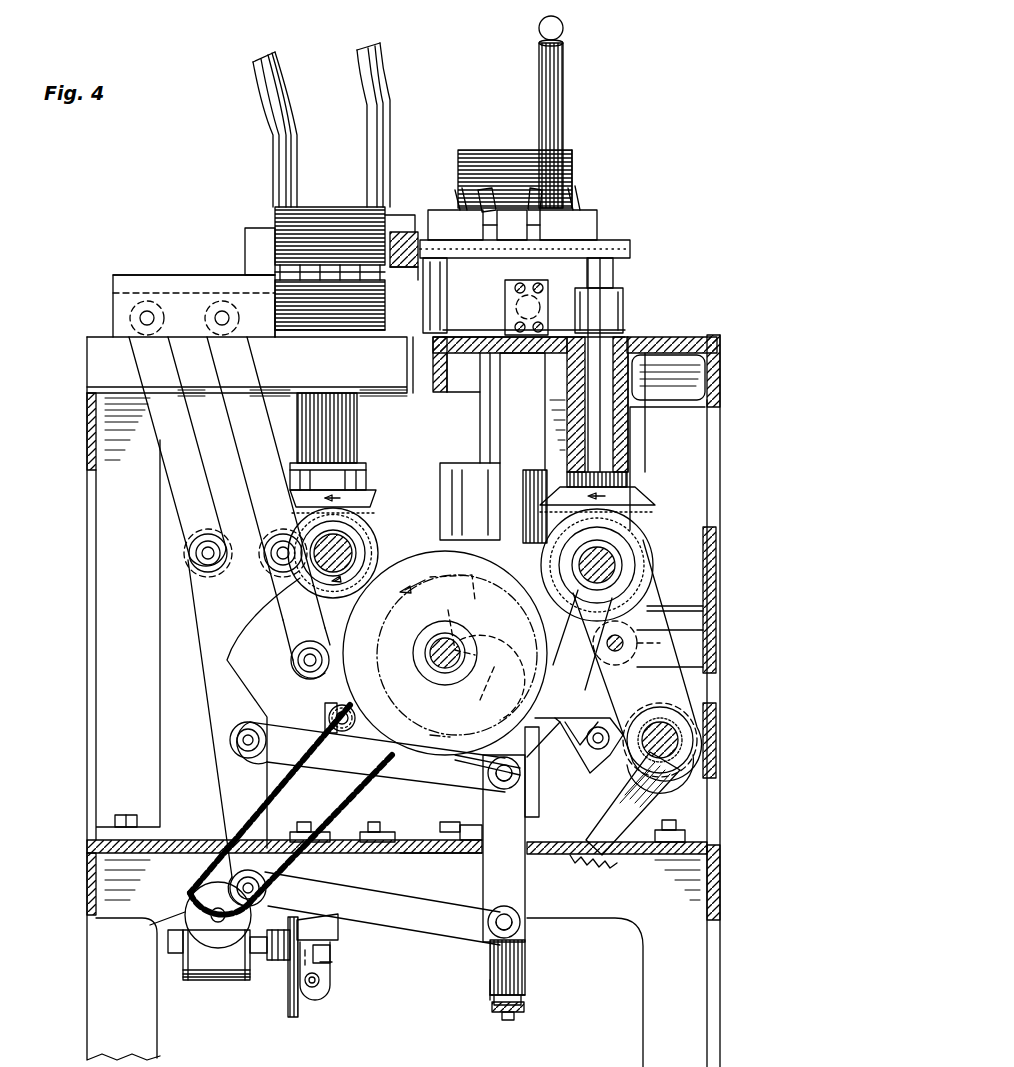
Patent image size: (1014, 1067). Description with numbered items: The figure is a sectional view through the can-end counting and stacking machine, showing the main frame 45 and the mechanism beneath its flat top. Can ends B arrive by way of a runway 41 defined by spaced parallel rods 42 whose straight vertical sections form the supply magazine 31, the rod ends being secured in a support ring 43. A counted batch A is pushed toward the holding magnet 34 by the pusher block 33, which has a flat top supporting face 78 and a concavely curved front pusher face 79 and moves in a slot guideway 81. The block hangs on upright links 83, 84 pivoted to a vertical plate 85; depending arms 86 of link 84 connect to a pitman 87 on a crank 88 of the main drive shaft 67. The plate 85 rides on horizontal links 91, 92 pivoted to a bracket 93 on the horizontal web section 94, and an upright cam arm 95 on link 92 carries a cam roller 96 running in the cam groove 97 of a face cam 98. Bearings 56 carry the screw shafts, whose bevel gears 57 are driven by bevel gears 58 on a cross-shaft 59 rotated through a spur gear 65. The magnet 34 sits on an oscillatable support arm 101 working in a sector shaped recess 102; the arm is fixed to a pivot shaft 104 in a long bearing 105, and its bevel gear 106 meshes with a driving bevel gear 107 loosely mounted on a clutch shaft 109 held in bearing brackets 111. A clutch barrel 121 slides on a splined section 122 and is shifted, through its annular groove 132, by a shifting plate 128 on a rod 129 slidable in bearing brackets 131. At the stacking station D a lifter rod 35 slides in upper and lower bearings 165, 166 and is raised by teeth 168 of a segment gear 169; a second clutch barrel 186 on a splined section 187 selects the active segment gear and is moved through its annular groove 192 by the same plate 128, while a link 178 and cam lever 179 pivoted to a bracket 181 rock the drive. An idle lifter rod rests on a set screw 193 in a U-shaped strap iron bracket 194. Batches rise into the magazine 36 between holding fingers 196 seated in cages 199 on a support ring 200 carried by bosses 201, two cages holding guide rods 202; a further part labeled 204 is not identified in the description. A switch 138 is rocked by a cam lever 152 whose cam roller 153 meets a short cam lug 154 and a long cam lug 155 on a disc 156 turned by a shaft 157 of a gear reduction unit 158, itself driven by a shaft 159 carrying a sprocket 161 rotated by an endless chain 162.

The runway 41 is at (320, 68).
The rods 42 is at (275, 103).
The supply magazine 31 is at (315, 190).
The support ring 43 is at (258, 238).
The pusher member 33 is at (135, 287).
The flat top supporting face 78 is at (170, 272).
The front pusher face 79 is at (273, 320).
The batch A is at (340, 300).
The can ends B is at (320, 215).
The slot guideway 81 is at (100, 358).
The upright link 83 is at (182, 417).
The upright link 84 is at (254, 417).
The plate 85 is at (220, 630).
The depending arms 86 is at (297, 627).
The pitman 87 is at (325, 678).
The bearings 56 is at (345, 425).
The bevel gears 57 is at (360, 470).
The spur gear 65 is at (360, 495).
The bevel gears 58 is at (372, 535).
The cross-shaft 59 is at (328, 562).
The crank 88 is at (485, 620).
The main drive shaft 67 is at (440, 660).
The cam roller 96 is at (505, 650).
The cam groove 97 is at (432, 735).
The face cam 98 is at (408, 753).
The horizontal link 92 is at (342, 758).
The horizontal link 91 is at (410, 916).
The bracket 93 is at (512, 838).
The horizontal web section 94 is at (425, 850).
The cam arm 95 is at (525, 748).
The lower bearing 166 is at (540, 797).
The upper bearing 165 is at (490, 425).
The annular groove 132 is at (547, 540).
The support arm 101 is at (485, 335).
The sector shaped recess 102 is at (470, 345).
The pivot shaft 104 is at (598, 355).
The long bearing 105 is at (640, 405).
The bevel gear 106 is at (640, 490).
The driving bevel gear 107 is at (636, 553).
The clutch shaft 109 is at (610, 567).
The bearing brackets 111 is at (685, 592).
The clutch barrel 121 is at (615, 545).
The splined section 122 is at (590, 592).
The shifting plate 128 is at (660, 608).
The horizontal rod 129 is at (618, 655).
The bearing brackets 131 is at (682, 636).
The link 178 is at (595, 765).
The cam lever 179 is at (565, 720).
The clutch barrel 186 is at (682, 740).
The splined section 187 is at (660, 728).
The annular groove 192 is at (668, 770).
The segment gear 169 is at (650, 821).
The teeth 168 is at (583, 866).
The lifter rod 35 is at (520, 972).
The set screw 193 is at (515, 1015).
The U-shaped strap iron bracket 194 is at (490, 990).
The short cam lug 154 is at (305, 940).
The bracket 181 is at (335, 796).
The endless chain 162 is at (318, 860).
The shaft 159 is at (212, 908).
The sprocket 161 is at (185, 912).
The gear reduction unit 158 is at (215, 965).
The shaft 157 is at (262, 960).
The rotatable disc 156 is at (290, 1008).
The cam lever 152 is at (320, 985).
The cam roller 153 is at (328, 948).
The long cam lug 155 is at (332, 964).
The switch 138 is at (328, 923).
The frame 45 is at (712, 378).
The magazine 36 is at (580, 178).
The stacking station D is at (574, 104).
The guide rods 202 is at (565, 68).
The pins 204 is at (450, 190).
The holding fingers 196 is at (455, 200).
The cages 199 is at (440, 218).
The support ring 200 is at (632, 246).
The bosses 201 is at (420, 290).
The holding magnet 34 is at (512, 305).